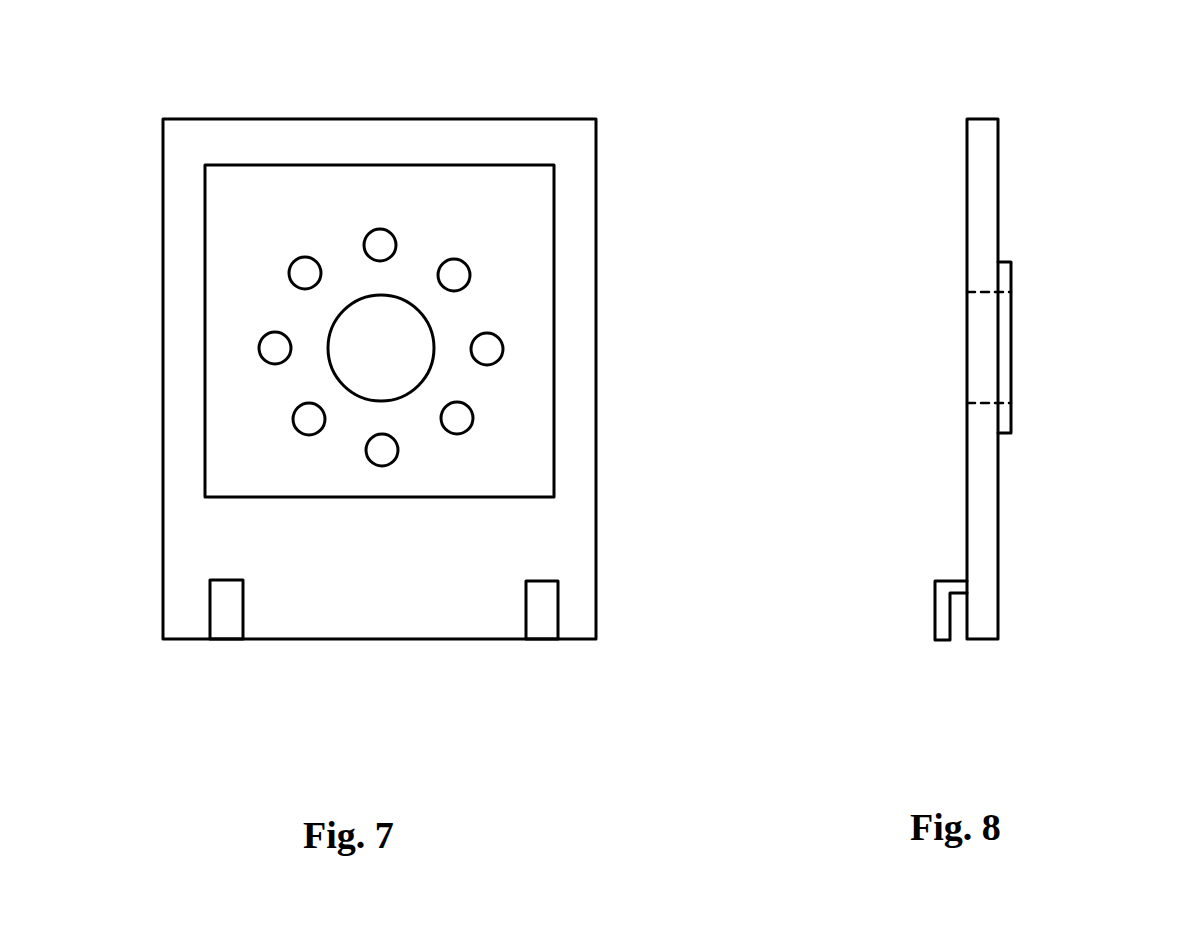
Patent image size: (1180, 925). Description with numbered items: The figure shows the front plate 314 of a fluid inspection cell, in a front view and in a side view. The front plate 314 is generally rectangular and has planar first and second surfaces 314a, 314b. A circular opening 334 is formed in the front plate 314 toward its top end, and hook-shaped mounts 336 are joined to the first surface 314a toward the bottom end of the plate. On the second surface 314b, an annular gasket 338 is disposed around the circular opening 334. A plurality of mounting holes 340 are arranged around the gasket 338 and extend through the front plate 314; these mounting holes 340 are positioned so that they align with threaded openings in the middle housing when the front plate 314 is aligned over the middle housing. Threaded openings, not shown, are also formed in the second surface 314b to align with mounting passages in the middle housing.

In FIG. 7, the front plate 314 is at (613, 113).
In FIG. 7, the first surface 314a is at (455, 557).
In FIG. 8, the second surface 314b is at (999, 195).
In FIG. 7, the circular opening 334 is at (395, 358).
In FIG. 8, the circular opening 334 is at (930, 618).
In FIG. 7, the hook-shaped mounts 336 is at (222, 608).
In FIG. 8, the annular gasket 338 is at (1012, 275).
In FIG. 7, the mounting holes 340 is at (305, 273).